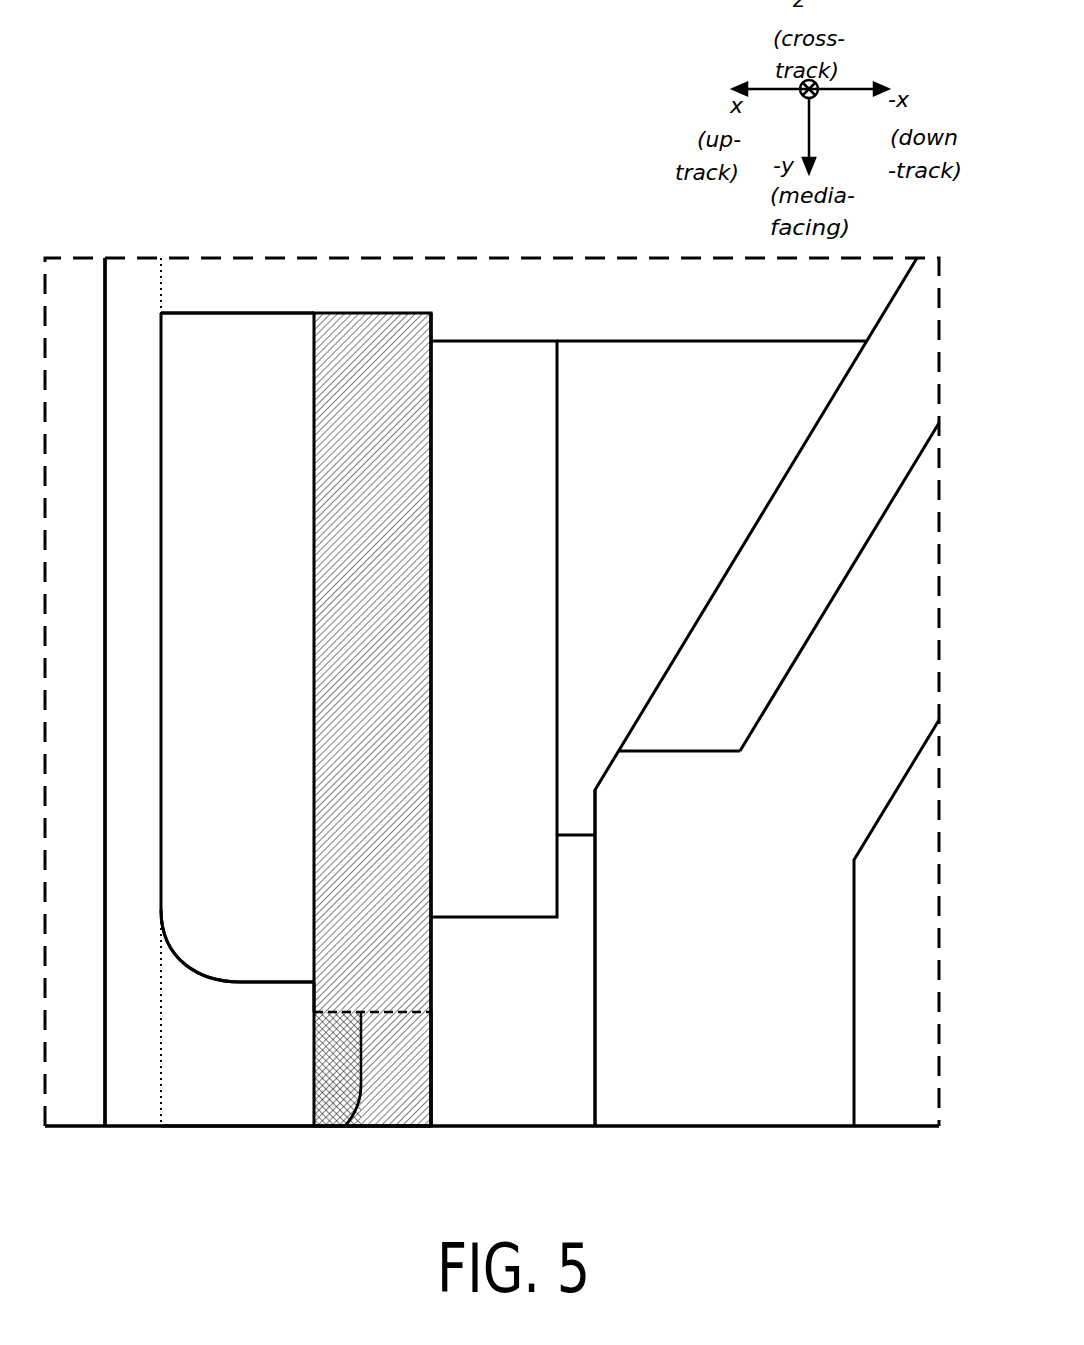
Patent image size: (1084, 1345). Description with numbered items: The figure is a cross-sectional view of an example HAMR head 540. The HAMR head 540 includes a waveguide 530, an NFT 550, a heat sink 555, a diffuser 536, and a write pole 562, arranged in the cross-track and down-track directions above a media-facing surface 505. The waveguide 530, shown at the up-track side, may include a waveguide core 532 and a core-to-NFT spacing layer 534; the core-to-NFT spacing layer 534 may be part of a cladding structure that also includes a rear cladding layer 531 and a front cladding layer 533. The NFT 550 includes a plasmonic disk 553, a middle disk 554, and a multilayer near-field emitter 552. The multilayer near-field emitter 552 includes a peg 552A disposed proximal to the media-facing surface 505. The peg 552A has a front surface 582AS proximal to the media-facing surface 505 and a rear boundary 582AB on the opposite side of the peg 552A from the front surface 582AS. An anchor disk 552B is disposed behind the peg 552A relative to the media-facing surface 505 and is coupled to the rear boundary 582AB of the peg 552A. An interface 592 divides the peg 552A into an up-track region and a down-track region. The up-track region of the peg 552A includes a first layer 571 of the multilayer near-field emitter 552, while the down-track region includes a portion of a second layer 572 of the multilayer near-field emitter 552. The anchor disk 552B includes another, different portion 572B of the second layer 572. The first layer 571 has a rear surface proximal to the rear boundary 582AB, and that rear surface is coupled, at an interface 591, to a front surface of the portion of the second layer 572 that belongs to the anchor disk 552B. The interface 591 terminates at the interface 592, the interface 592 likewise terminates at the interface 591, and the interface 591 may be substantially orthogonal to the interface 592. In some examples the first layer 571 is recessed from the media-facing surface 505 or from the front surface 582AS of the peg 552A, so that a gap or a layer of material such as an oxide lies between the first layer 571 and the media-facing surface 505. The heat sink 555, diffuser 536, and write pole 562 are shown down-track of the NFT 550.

The media-facing surface 505 is at (182, 1126).
The waveguide 530 is at (45, 258).
The rear cladding layer 531 is at (255, 303).
The waveguide core 532 is at (98, 707).
The front cladding layer 533 is at (265, 1087).
The core-to-NFT spacing layer 534 is at (158, 707).
The diffuser 536 is at (732, 727).
The HAMR head 540 is at (470, 112).
The NFT 550 is at (462, 288).
The multilayer near-field emitter 552 is at (368, 312).
The peg 552A is at (436, 1092).
The anchor disk 552B is at (436, 471).
The plasmonic disk 553 is at (265, 663).
The middle disk 554 is at (518, 633).
The heat sink 555 is at (682, 545).
The write pole 562 is at (750, 1011).
The first layer 571 is at (335, 1060).
The second layer 572 is at (372, 719).
The portion of second layer 572B is at (400, 565).
The rear boundary 582AB is at (376, 1008).
The front surface 582AS is at (374, 1130).
The interface 591 is at (342, 1008).
The interface 592 is at (352, 1126).